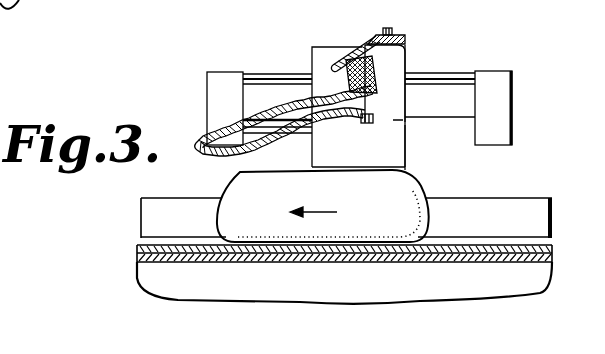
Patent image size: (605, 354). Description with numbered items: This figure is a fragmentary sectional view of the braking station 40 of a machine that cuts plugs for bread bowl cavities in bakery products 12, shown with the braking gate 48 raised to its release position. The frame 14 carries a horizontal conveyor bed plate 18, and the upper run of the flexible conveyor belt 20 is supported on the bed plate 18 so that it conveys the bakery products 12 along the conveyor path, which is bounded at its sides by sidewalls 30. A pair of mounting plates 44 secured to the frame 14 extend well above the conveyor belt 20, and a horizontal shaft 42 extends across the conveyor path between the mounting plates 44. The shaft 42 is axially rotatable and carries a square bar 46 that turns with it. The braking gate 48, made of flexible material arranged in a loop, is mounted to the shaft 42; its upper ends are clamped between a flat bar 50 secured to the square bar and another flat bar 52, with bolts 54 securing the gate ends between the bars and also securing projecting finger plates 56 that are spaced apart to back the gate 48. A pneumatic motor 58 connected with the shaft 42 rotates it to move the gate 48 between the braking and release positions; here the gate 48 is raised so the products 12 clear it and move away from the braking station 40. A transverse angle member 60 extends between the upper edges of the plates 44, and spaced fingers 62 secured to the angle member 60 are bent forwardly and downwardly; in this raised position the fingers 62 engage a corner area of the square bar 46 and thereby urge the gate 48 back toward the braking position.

The bakery products 12 is at (407, 197).
The frame 14 is at (140, 280).
The conveyor bed plate 18 is at (250, 263).
The conveyor belt 20 is at (487, 245).
The sidewalls 30 is at (146, 222).
The braking station 40 is at (522, 86).
The horizontal shaft 42 is at (344, 60).
The mounting plates 44 is at (318, 47).
The square bar 46 is at (345, 77).
The braking gate 48 is at (201, 165).
The flat bar 50 is at (380, 118).
The flat bar 52 is at (405, 105).
The bolts 54 is at (366, 123).
The finger plates 56 is at (288, 100).
The pneumatic motor 58 is at (462, 88).
The transverse angle member 60 is at (407, 41).
The fingers 62 is at (392, 35).